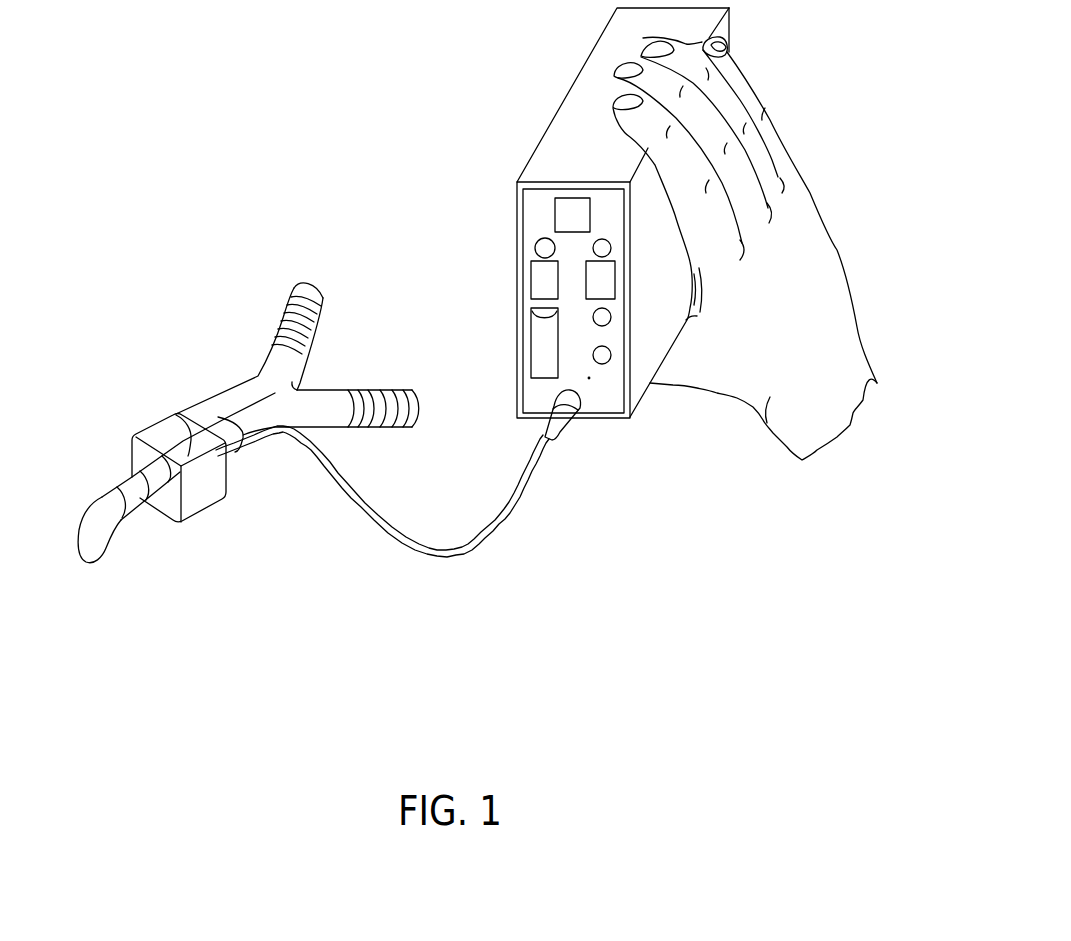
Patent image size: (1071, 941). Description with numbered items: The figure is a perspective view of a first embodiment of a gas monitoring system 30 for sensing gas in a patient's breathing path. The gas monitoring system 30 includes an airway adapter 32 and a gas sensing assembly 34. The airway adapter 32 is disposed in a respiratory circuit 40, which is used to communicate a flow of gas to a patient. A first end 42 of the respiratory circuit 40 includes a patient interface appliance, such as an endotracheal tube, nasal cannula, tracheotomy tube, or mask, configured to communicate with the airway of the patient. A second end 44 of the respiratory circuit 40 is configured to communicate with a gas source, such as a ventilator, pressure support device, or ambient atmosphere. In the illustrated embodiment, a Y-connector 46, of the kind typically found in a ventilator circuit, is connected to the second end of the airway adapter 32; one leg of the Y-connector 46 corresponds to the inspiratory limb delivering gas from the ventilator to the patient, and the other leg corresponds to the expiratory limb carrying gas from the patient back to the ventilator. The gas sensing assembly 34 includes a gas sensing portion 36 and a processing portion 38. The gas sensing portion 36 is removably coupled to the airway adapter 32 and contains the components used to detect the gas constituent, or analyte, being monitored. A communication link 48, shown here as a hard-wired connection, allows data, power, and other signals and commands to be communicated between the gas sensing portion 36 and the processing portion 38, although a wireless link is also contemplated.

The gas monitoring system 30 is at (300, 147).
The airway adapter 32 is at (191, 444).
The gas sensing assembly 34 is at (315, 643).
The gas sensing portion 36 is at (200, 513).
The processing portion 38 is at (553, 121).
The respiratory circuit 40 is at (250, 403).
The first end 42 is at (101, 498).
The second end 44 is at (325, 310).
The Y-connector 46 is at (288, 412).
The communication link 48 is at (443, 553).